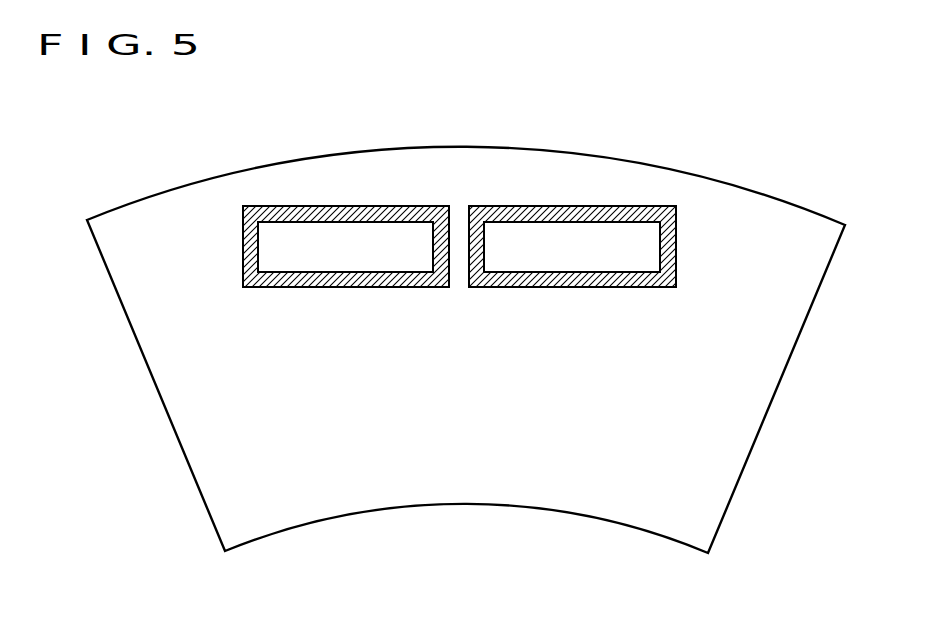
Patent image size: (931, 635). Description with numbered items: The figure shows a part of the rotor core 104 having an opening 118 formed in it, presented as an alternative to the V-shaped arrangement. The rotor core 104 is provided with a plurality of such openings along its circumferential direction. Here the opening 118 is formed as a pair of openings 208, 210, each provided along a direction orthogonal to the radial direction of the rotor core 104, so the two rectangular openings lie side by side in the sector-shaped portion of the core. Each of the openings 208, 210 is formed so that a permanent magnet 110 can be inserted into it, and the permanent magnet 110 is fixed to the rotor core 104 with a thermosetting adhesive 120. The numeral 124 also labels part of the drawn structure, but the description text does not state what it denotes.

The rotor core 104 is at (459, 162).
The opening 208 is at (355, 207).
The opening 210 is at (575, 207).
The first coil space 124 is at (305, 252).
The thermosetting adhesive 120 is at (528, 290).
The permanent magnet 110 is at (397, 288).
The opening 118 is at (462, 325).